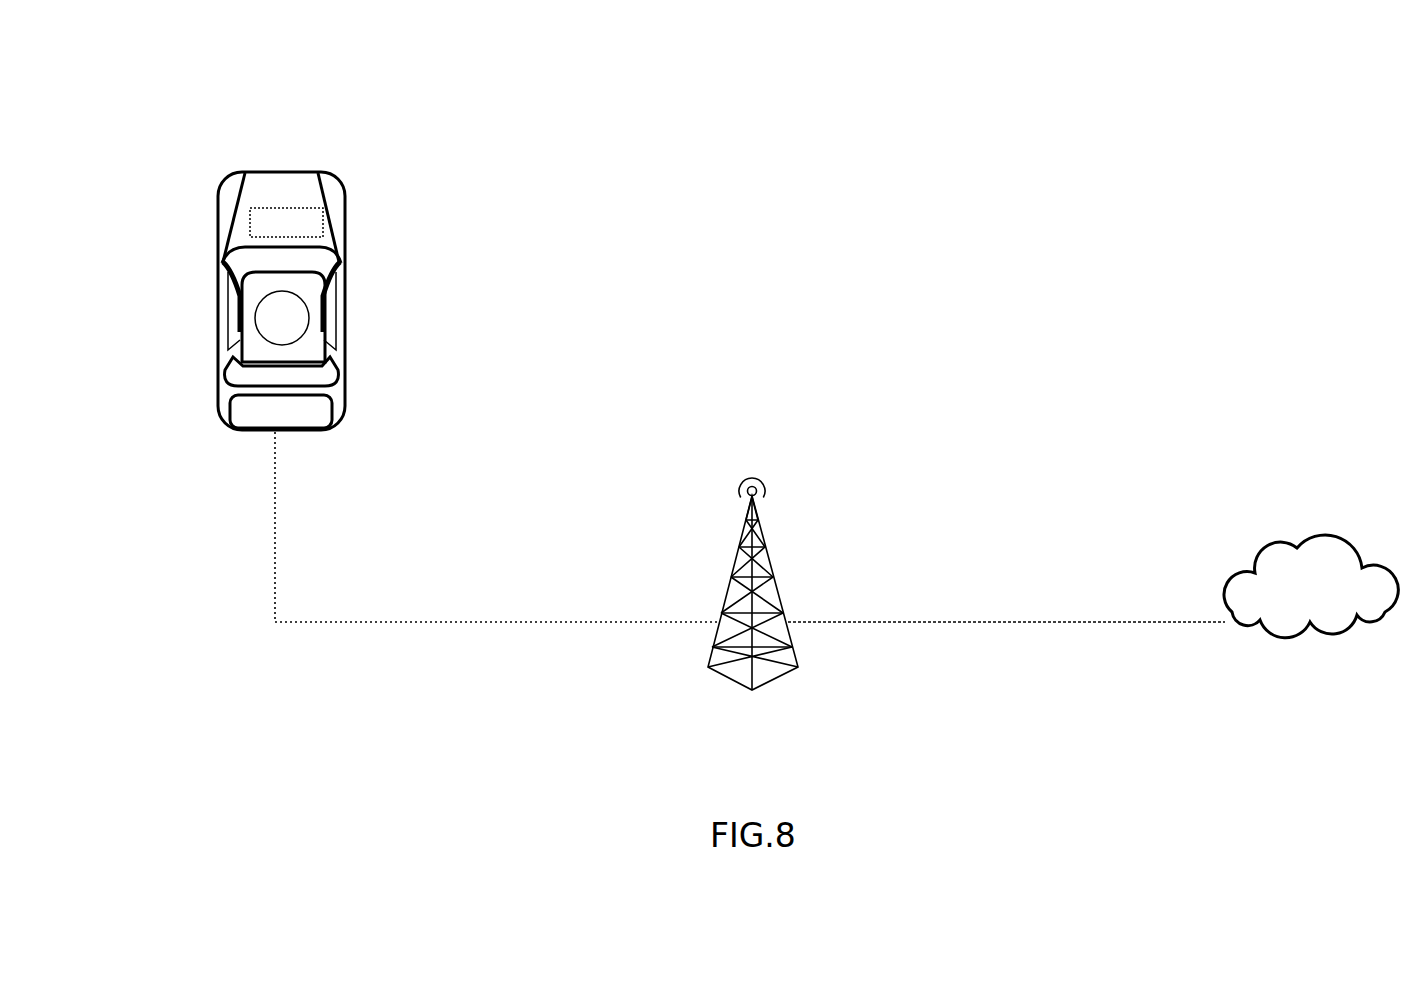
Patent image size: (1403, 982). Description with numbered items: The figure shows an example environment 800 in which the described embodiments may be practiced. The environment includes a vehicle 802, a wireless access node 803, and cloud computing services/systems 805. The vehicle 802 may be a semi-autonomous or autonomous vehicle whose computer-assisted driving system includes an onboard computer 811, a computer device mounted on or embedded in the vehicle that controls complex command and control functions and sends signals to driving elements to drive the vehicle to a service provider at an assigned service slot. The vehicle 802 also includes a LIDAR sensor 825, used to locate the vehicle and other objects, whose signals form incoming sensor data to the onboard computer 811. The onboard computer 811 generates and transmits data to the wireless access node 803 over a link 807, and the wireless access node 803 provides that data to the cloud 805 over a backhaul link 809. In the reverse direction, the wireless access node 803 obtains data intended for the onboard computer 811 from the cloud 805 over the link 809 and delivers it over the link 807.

The environment 800 is at (1118, 70).
The vehicle 802 is at (264, 307).
The onboard computer 811 is at (286, 222).
The LIDAR sensor 825 is at (257, 318).
The link 807 is at (453, 622).
The wireless access node 803 is at (767, 502).
The backhaul link 809 is at (930, 622).
The cloud computing services/systems 805 is at (1327, 522).